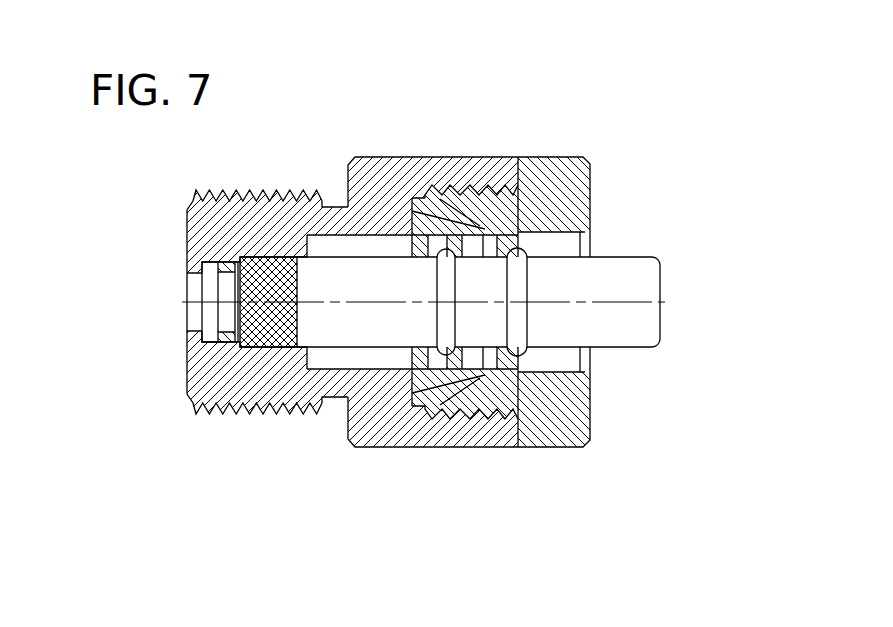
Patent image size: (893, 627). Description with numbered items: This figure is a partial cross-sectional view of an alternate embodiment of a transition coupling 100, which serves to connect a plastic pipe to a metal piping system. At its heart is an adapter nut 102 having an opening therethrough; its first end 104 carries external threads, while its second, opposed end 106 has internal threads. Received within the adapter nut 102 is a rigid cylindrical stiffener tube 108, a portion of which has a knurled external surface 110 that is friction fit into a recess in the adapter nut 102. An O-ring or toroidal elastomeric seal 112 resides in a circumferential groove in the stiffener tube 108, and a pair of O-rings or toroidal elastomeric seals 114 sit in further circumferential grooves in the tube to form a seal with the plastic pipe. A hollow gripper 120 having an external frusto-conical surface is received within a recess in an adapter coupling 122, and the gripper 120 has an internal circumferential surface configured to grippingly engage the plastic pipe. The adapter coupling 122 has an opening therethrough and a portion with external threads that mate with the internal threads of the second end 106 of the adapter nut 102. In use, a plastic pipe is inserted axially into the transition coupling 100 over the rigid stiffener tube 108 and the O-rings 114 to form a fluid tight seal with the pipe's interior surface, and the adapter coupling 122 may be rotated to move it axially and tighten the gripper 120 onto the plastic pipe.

The transition coupling 100 is at (474, 116).
The adapter nut 102 is at (262, 220).
The first end 104 is at (187, 252).
The second end 106 is at (498, 440).
The rigid cylindrical stiffener tube 108 is at (637, 265).
The knurled external surface 110 is at (270, 350).
The O-ring or toroidal elastomeric seal 112 is at (225, 267).
The O-rings or toroidal elastomeric seals 114 is at (518, 285).
The hollow gripper 120 is at (441, 218).
The adapter coupling 122 is at (575, 422).